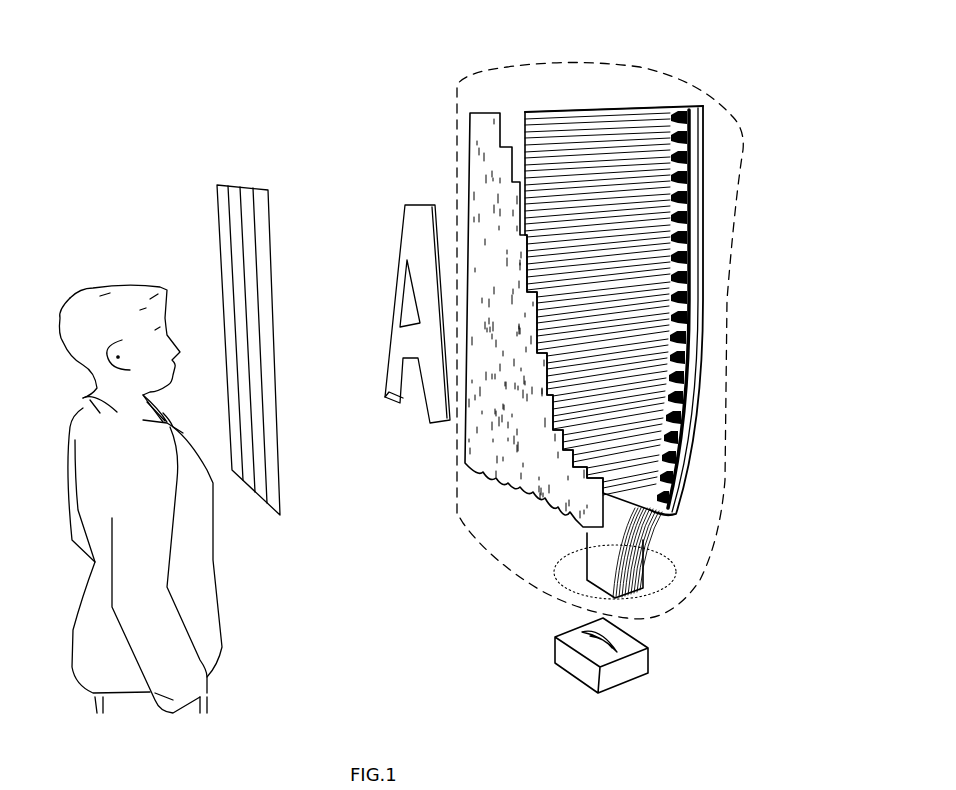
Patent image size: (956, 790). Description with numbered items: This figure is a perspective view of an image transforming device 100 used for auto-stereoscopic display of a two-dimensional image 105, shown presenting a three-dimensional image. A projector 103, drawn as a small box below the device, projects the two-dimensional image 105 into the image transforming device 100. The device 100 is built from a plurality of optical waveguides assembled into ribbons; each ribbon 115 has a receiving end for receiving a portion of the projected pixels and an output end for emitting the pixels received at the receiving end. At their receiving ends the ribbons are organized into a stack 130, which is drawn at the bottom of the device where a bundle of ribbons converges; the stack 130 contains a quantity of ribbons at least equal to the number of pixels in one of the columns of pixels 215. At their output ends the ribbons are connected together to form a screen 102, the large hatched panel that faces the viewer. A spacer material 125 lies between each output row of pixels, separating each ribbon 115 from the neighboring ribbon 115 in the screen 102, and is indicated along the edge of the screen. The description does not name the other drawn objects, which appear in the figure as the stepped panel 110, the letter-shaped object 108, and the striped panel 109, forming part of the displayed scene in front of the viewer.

The image transforming device 100 is at (682, 82).
The screen 102 is at (583, 104).
The projector 103 is at (610, 672).
The two-dimensional image 105 is at (617, 645).
The letter A object 108 is at (407, 250).
The striped panel object 109 is at (236, 222).
The stepped light guide panel 110 is at (483, 195).
The ribbon 115 is at (686, 432).
The spacer material 125 is at (665, 123).
The stack 130 is at (557, 570).
The columns of pixels 215 is at (138, 537).